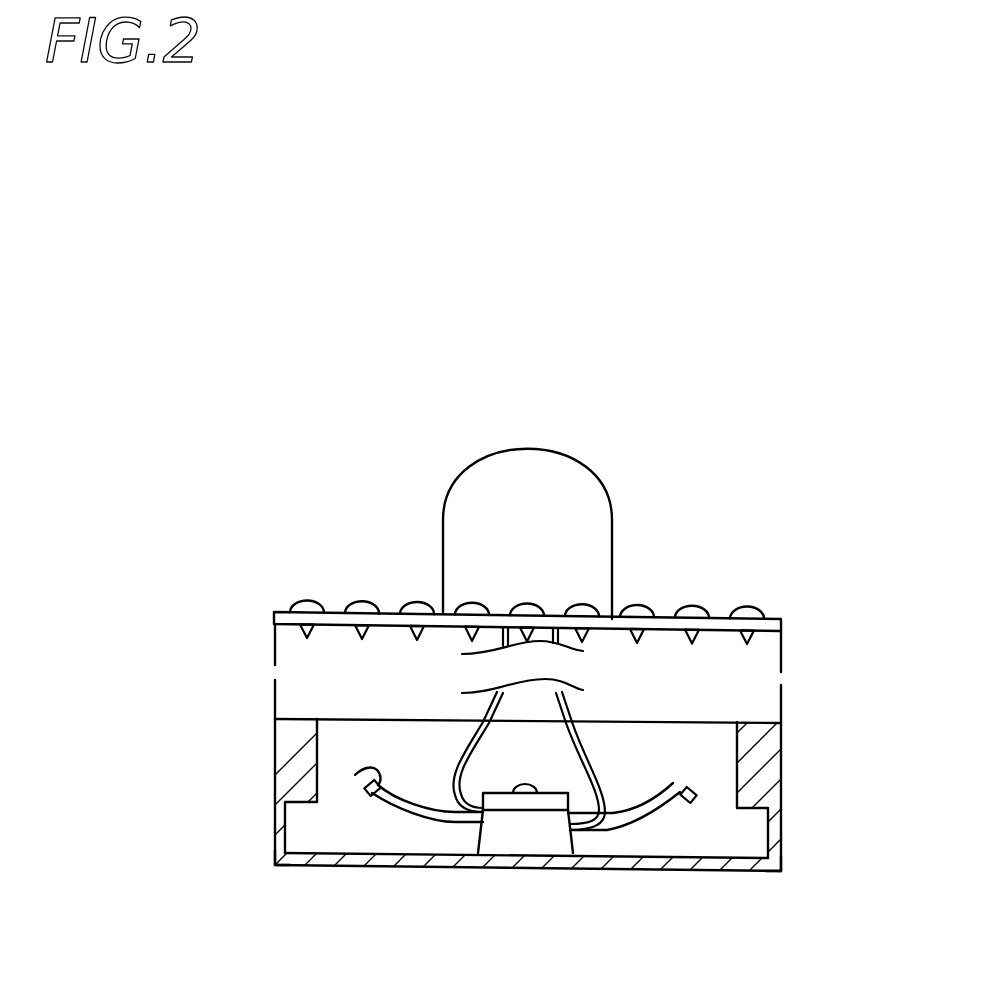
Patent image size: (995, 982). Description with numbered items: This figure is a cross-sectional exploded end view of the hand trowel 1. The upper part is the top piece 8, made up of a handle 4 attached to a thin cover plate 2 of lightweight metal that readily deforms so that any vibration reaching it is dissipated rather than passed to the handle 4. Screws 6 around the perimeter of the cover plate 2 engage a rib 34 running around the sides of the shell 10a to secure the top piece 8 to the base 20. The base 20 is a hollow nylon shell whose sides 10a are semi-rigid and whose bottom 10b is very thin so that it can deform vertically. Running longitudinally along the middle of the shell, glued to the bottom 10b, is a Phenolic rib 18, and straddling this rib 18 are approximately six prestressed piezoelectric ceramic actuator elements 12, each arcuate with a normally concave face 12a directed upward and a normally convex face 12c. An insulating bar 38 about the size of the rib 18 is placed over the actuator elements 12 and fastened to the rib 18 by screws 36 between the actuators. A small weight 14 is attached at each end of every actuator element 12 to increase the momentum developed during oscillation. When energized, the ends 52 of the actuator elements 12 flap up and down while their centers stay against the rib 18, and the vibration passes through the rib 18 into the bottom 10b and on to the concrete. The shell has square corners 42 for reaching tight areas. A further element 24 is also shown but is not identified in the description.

The trowel 1 is at (382, 458).
The cover plate 2 is at (782, 626).
The handle 4 is at (613, 532).
The screws 6 is at (760, 611).
The top piece 8 is at (228, 622).
The sides of the shell 10a is at (276, 785).
The bottom of the shell 10b is at (643, 862).
The actuator elements 12 is at (432, 840).
The normally concave face 12a is at (416, 785).
The normally convex face 12c is at (407, 822).
The weight 14 is at (375, 800).
The rib 18 is at (510, 840).
The base 20 is at (98, 785).
The lead 24 is at (597, 764).
The rib 34 is at (300, 765).
The screws 36 is at (533, 786).
The bar 38 is at (533, 805).
The square corners 42 is at (275, 863).
The ends of the actuator elements 52 is at (355, 775).